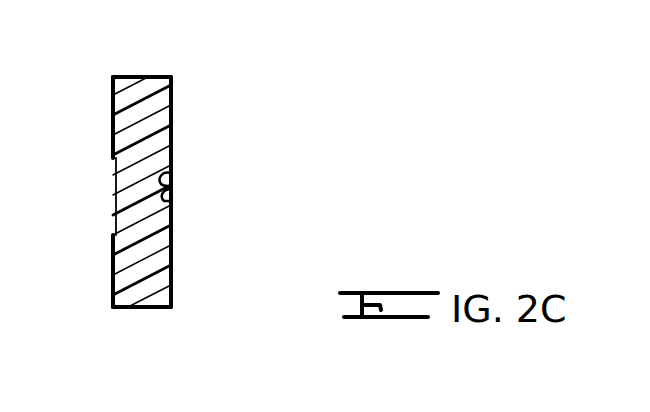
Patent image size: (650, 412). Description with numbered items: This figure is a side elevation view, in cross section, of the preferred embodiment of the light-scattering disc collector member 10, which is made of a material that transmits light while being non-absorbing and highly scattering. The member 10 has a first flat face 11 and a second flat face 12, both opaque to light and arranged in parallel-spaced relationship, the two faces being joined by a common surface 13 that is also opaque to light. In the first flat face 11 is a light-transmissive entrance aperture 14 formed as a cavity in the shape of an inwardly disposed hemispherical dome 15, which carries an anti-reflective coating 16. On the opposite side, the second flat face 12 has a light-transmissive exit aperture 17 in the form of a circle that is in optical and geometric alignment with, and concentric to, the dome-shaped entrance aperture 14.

The light-scattering disc collector member 10 is at (236, 125).
The first flat face 11 is at (172, 106).
The second flat face 12 is at (113, 118).
The common surface 13 is at (137, 77).
The light-transmissive entrance aperture 14 is at (172, 193).
The inwardly disposed hemispherical dome 15 is at (172, 172).
The anti-reflective coating 16 is at (172, 198).
The light-transmissive exit aperture 17 is at (117, 203).